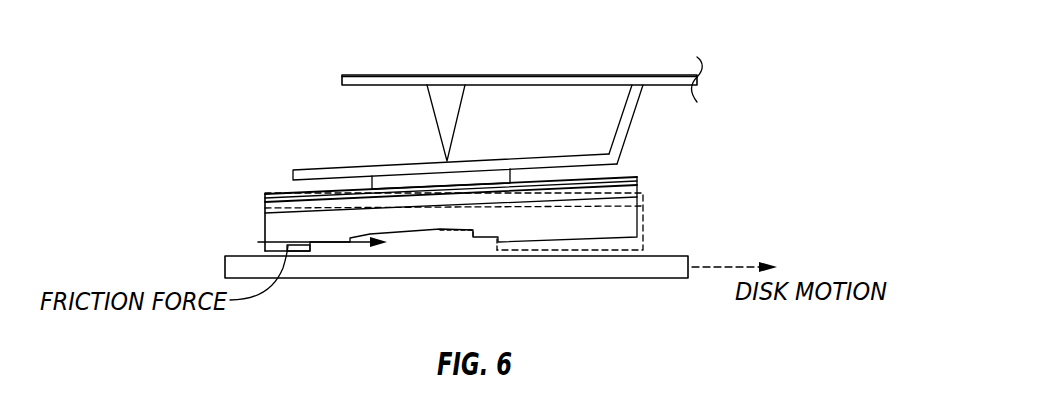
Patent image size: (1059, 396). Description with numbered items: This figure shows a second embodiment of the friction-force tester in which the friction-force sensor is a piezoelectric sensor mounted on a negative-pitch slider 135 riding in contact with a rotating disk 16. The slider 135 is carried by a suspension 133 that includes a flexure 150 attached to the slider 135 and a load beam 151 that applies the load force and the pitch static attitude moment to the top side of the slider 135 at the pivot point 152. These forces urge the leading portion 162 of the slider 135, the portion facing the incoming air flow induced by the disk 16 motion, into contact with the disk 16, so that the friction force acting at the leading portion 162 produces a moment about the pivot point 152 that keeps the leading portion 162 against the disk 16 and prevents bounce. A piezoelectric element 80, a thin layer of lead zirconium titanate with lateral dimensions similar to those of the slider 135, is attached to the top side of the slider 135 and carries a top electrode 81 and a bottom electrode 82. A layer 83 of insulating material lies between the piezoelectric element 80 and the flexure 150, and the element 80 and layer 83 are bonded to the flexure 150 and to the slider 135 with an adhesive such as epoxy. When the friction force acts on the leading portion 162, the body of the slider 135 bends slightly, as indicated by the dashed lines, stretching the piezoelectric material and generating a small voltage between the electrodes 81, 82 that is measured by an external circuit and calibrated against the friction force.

The rotating disk 16 is at (667, 280).
The piezoelectric element 80 is at (263, 200).
The top electrode 81 is at (284, 193).
The bottom electrode 82 is at (263, 210).
The layer of insulating material 83 is at (496, 174).
The suspension 133 is at (673, 73).
The negative-pitch slider 135 is at (645, 220).
The flexure 150 is at (630, 120).
The load beam 151 is at (563, 74).
The pivot point 152 is at (444, 157).
The leading portion 162 is at (275, 232).